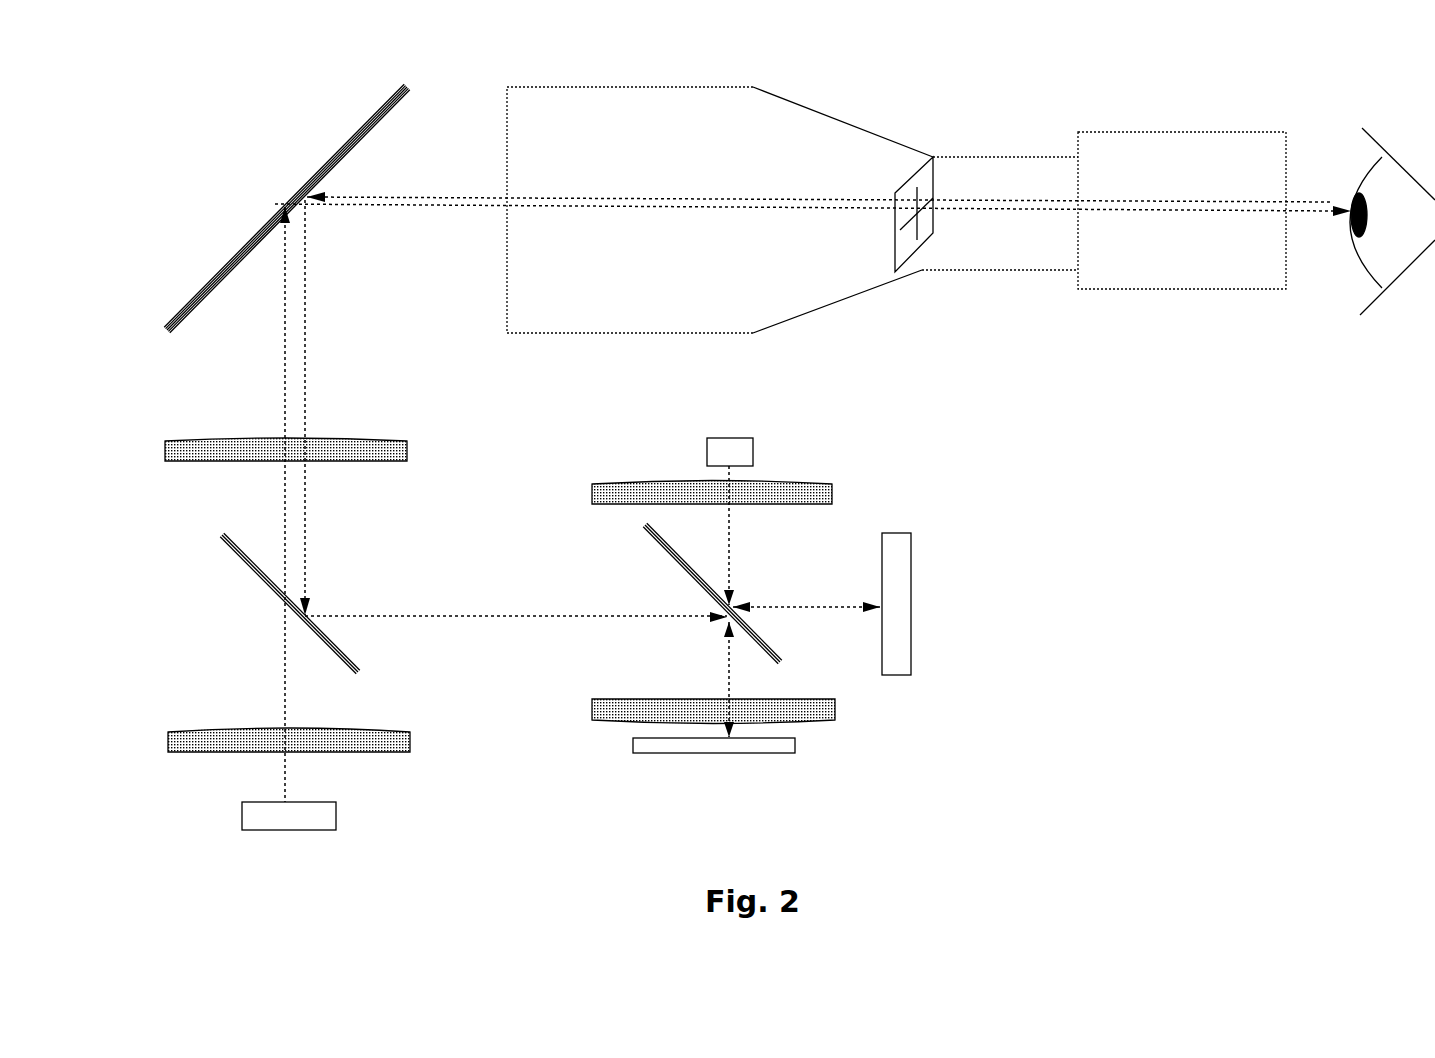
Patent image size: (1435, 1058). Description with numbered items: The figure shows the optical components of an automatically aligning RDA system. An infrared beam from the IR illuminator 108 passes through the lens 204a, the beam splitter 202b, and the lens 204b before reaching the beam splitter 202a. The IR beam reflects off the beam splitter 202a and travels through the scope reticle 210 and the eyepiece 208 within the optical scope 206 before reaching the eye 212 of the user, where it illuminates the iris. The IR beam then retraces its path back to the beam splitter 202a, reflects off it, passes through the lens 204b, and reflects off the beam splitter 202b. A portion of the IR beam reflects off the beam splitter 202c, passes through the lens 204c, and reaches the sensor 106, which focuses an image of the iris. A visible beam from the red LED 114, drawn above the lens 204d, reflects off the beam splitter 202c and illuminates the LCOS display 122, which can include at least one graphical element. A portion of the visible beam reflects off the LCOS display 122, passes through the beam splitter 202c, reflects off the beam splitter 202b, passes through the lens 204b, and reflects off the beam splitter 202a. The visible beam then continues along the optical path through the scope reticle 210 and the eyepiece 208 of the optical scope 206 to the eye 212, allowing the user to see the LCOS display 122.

The sensor 106 is at (713, 753).
The IR illuminator 108 is at (287, 832).
The red LED 114 is at (730, 442).
The LCOS display 122 is at (908, 597).
The beam splitter 202a is at (168, 328).
The beam splitter 202b is at (222, 540).
The beam splitter 202c is at (645, 533).
The lens 204a is at (168, 738).
The lens 204b is at (165, 453).
The lens 204c is at (592, 710).
The lens 204d is at (598, 487).
The optical scope 206 is at (637, 92).
The eyepiece 208 is at (1181, 286).
The scope reticle 210 is at (930, 155).
The eye 212 is at (1362, 173).